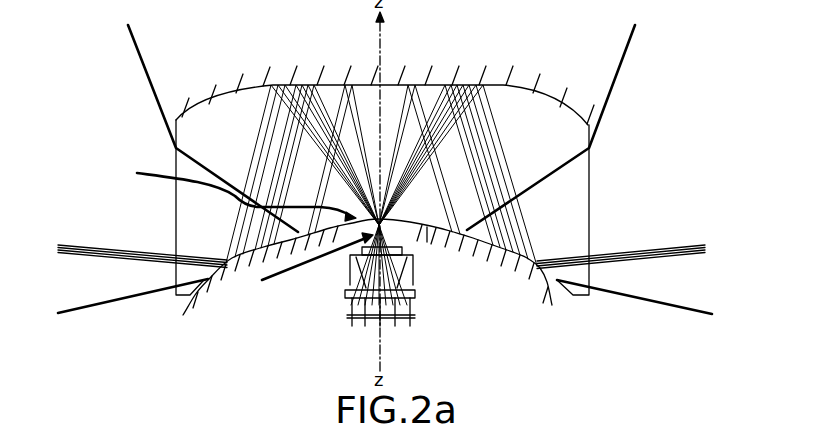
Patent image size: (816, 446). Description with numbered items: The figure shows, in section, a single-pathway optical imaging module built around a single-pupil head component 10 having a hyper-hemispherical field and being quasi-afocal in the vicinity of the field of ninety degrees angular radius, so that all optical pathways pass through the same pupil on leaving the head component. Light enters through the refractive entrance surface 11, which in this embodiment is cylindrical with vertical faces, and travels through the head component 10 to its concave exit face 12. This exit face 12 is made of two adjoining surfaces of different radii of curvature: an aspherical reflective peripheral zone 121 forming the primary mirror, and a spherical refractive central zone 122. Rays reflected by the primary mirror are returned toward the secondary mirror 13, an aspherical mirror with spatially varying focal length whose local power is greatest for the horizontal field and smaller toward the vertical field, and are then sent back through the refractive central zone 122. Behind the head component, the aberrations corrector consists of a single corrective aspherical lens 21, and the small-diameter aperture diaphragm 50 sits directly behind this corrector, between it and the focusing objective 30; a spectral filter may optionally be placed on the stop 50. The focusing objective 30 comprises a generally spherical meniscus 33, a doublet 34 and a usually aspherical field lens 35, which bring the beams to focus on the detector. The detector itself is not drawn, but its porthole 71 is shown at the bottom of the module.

The single-pupil head component 10 is at (636, 196).
The refractive entrance surface 11 is at (173, 165).
The exit face 12 is at (86, 153).
The reflective peripheral zone 121 is at (245, 257).
The refractive central zone 122 is at (223, 192).
The secondary mirror 13 is at (528, 96).
The corrective aspherical lens 21 is at (460, 244).
The focusing objective 30 is at (418, 242).
The spherical meniscus 33 is at (348, 257).
The doublet 34 is at (350, 288).
The field lens 35 is at (358, 300).
The aperture diaphragm 50 is at (303, 266).
The porthole of the detector 71 is at (413, 317).